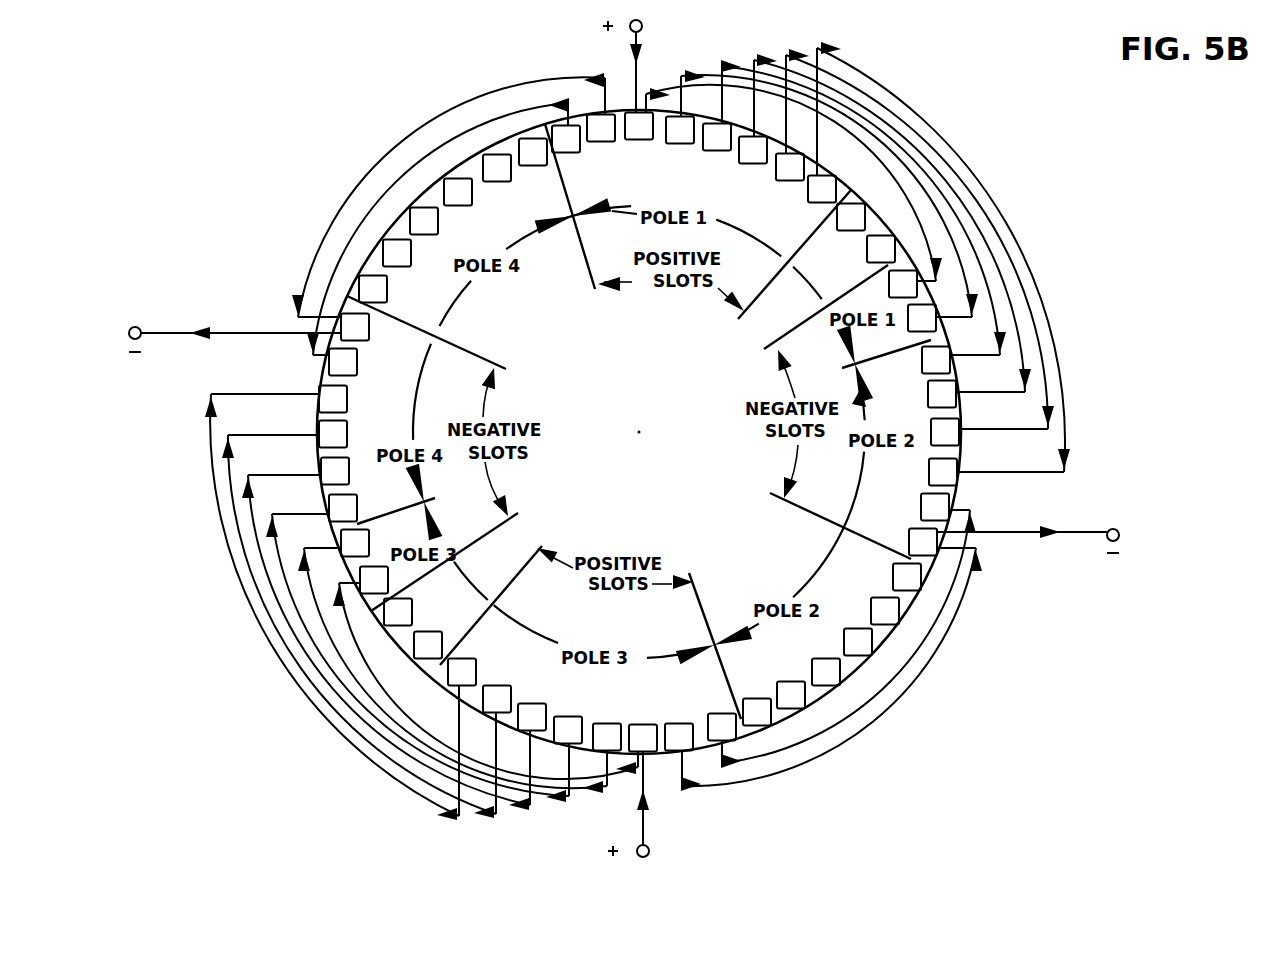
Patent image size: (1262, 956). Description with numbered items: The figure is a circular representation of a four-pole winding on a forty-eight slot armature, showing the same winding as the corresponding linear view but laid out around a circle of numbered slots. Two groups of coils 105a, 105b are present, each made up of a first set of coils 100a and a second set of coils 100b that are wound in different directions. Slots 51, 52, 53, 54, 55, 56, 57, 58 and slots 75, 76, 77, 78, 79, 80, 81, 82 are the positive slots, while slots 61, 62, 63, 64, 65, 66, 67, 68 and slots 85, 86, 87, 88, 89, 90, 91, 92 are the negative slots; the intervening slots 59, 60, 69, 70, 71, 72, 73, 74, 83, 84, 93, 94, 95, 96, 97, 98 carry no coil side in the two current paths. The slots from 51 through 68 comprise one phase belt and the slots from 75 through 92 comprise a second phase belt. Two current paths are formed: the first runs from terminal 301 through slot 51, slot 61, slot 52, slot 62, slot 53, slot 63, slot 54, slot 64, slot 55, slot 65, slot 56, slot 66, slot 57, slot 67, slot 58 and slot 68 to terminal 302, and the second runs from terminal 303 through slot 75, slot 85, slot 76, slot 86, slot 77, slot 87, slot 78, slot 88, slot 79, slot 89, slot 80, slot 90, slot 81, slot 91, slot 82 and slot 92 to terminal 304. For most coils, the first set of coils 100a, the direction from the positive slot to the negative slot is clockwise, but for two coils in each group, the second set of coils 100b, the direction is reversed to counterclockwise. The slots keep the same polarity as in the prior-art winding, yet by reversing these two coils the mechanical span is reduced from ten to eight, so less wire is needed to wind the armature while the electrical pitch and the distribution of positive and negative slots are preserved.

The positive slot 51 is at (566, 139).
The positive slot 52 is at (601, 128).
The positive slot 53 is at (639, 126).
The positive slot 54 is at (680, 130).
The positive slot 55 is at (717, 137).
The positive slot 56 is at (753, 150).
The positive slot 57 is at (790, 167).
The positive slot 58 is at (822, 189).
The armature slot 59 is at (851, 217).
The armature slot 60 is at (881, 249).
The negative slot 61 is at (903, 284).
The negative slot 62 is at (922, 318).
The negative slot 63 is at (936, 360).
The negative slot 64 is at (942, 394).
The negative slot 65 is at (945, 432).
The negative slot 66 is at (943, 472).
The negative slot 67 is at (935, 507).
The negative slot 68 is at (923, 542).
The armature slot 69 is at (907, 577).
The armature slot 70 is at (885, 611).
The armature slot 71 is at (858, 642).
The armature slot 72 is at (826, 672).
The armature slot 73 is at (791, 695).
The armature slot 74 is at (757, 712).
The positive slot 75 is at (722, 727).
The positive slot 76 is at (679, 737).
The positive slot 77 is at (643, 738).
The positive slot 78 is at (607, 737).
The positive slot 79 is at (568, 730).
The positive slot 80 is at (532, 717).
The positive slot 81 is at (497, 699).
The positive slot 82 is at (462, 672).
The armature slot 83 is at (428, 645).
The armature slot 84 is at (398, 612).
The negative slot 85 is at (374, 580).
The negative slot 86 is at (355, 543).
The negative slot 87 is at (343, 508).
The negative slot 88 is at (335, 471).
The negative slot 89 is at (333, 434).
The negative slot 90 is at (333, 399).
The negative slot 91 is at (343, 362).
The negative slot 92 is at (355, 327).
The armature slot 93 is at (373, 289).
The armature slot 94 is at (397, 253).
The armature slot 95 is at (424, 221).
The armature slot 96 is at (458, 192).
The armature slot 97 is at (497, 168).
The armature slot 98 is at (533, 152).
The first set of coils 100a is at (854, 119).
The second set of coils 100b is at (377, 208).
The first group of coils 105a is at (1020, 201).
The second group of coils 105b is at (200, 478).
The current path terminal 301 is at (655, 37).
The current path terminal 302 is at (1108, 526).
The current path terminal 303 is at (663, 829).
The current path terminal 304 is at (156, 312).